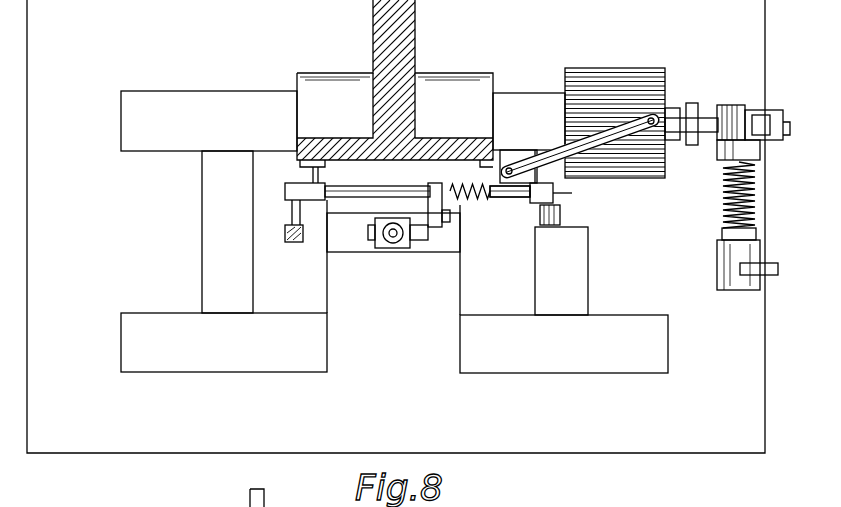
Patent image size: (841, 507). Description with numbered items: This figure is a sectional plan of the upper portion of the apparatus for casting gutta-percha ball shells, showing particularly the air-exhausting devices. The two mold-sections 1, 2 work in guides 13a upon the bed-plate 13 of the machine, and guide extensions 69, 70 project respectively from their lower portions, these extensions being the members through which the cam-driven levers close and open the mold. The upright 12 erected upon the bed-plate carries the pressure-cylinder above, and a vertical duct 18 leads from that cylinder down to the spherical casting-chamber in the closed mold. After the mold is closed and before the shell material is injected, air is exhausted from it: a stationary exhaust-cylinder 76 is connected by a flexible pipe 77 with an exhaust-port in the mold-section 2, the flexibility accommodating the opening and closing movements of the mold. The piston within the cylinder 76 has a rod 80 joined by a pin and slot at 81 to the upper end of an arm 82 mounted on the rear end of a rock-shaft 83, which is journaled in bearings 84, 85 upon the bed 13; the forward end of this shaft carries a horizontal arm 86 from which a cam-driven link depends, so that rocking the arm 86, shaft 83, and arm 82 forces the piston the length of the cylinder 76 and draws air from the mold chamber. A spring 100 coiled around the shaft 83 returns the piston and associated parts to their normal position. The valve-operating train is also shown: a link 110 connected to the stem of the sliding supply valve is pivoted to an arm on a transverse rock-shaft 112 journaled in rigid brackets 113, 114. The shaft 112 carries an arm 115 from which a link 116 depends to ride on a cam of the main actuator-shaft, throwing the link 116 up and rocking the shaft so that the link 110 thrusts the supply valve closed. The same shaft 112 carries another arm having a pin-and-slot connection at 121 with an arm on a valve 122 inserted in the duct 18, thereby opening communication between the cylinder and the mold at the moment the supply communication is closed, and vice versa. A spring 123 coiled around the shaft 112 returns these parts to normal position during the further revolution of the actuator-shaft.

The mold-section 1 is at (303, 256).
The mold-section 2 is at (497, 232).
The upright 12 is at (402, 44).
The bed-plate 13 is at (396, 226).
The guides 13a is at (247, 103).
The vertical duct 18 is at (393, 244).
The guide extension 69 is at (227, 232).
The guide extension 70 is at (561, 271).
The exhaust-cylinder 76 is at (618, 82).
The pipe 77 is at (513, 168).
The rod 80 is at (710, 114).
The pin and slot connection 81 is at (772, 130).
The arm 82 is at (762, 124).
The rock-shaft 83 is at (723, 199).
The bearing 84 is at (735, 148).
The bearing 85 is at (726, 246).
The horizontal arm 86 is at (768, 275).
The spring 100 is at (727, 214).
The link 110 is at (284, 236).
The transverse rock-shaft 112 is at (350, 190).
The bracket 113 is at (305, 205).
The bracket 114 is at (515, 198).
The arm 115 is at (555, 204).
The link 116 is at (561, 218).
The pin-and-slot connection 121 is at (433, 183).
The valve 122 is at (440, 216).
The spring 123 is at (478, 186).